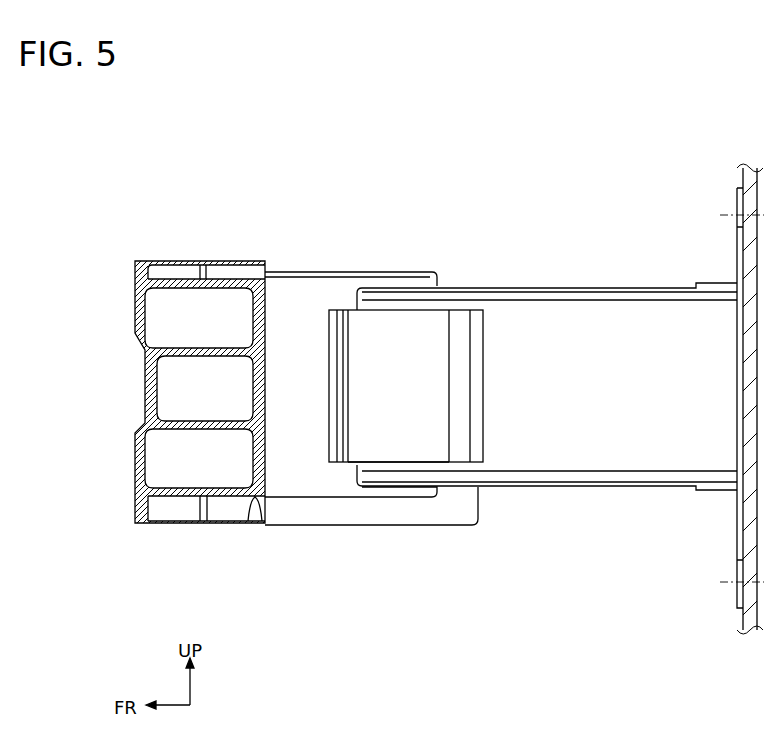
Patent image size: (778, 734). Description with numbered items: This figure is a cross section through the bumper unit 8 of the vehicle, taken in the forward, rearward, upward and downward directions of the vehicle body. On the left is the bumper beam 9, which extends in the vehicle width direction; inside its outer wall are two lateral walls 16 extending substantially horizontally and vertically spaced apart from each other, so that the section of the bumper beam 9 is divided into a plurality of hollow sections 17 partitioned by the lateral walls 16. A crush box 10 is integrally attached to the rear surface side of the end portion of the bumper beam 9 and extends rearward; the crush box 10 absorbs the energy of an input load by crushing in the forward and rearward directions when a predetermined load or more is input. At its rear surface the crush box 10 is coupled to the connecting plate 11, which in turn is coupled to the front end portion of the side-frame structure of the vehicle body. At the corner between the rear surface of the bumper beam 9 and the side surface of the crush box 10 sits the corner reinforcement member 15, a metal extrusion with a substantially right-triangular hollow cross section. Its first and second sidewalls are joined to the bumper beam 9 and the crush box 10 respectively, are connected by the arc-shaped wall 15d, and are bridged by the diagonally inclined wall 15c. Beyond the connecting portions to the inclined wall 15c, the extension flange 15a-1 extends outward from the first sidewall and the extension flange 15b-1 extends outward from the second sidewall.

The bumper unit 8 is at (357, 231).
The bumper beam 9 is at (128, 308).
The crush box 10 is at (578, 287).
The connecting plate 11 is at (737, 533).
The corner reinforcement member 15 is at (427, 317).
The extension flange 15a-1 is at (463, 450).
The extension flange 15b-1 is at (333, 463).
The inclined wall 15c is at (403, 442).
The arc-shaped wall 15d is at (347, 428).
The lateral wall 16 is at (170, 350).
The hollow section 17 is at (203, 375).